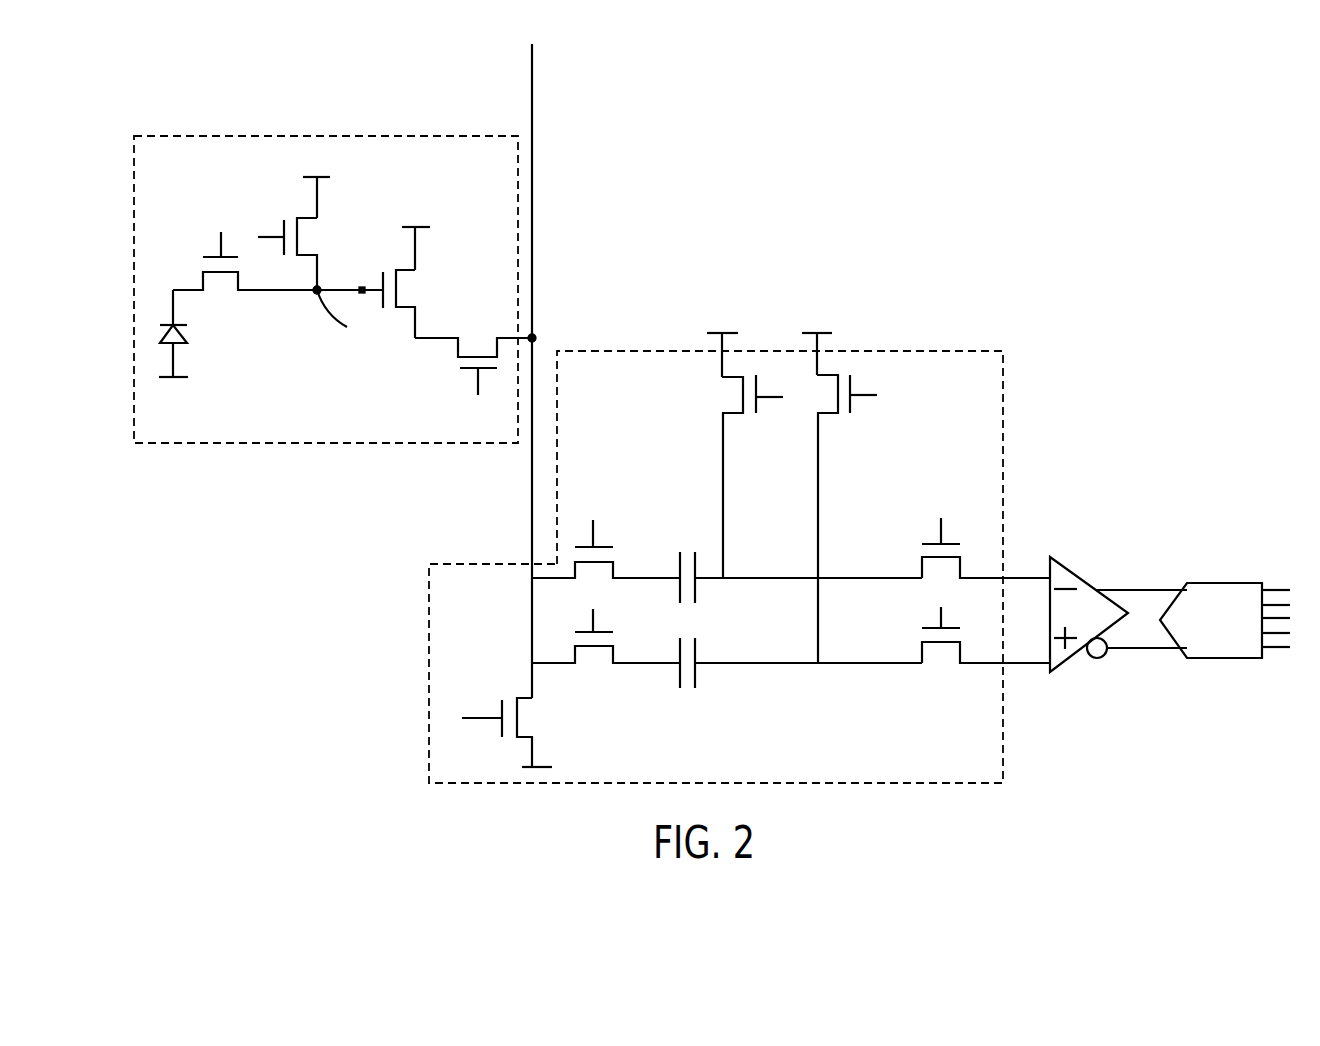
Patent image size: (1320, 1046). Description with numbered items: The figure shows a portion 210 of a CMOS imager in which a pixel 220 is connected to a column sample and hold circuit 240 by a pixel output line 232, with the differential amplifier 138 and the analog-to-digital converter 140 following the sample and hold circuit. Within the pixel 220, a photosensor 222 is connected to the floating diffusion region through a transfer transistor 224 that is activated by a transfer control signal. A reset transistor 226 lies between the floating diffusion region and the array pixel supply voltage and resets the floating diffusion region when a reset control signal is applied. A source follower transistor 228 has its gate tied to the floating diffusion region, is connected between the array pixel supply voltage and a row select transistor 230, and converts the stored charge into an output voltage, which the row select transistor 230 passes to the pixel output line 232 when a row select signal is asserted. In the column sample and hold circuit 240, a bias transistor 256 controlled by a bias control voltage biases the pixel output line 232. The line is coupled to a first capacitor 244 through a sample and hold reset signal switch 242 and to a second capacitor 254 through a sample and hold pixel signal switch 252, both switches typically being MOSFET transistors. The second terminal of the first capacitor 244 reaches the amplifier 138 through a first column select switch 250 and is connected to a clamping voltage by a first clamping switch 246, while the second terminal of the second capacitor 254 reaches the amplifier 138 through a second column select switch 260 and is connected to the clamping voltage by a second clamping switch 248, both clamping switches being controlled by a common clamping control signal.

The portion 210 is at (923, 155).
The pixel 220 is at (303, 443).
The photosensor 222 is at (162, 337).
The transfer transistor 224 is at (203, 272).
The reset transistor 226 is at (297, 255).
The source follower transistor 228 is at (415, 272).
The row select transistor 230 is at (458, 357).
The pixel output line 232 is at (532, 288).
The column sample and hold circuit 240 is at (1002, 410).
The sample and hold reset signal switch 242 is at (613, 562).
The first capacitor 244 is at (683, 552).
The first clamping switch 246 is at (743, 413).
The second clamping switch 248 is at (838, 413).
The first column select switch 250 is at (922, 558).
The sample and hold pixel signal switch 252 is at (613, 663).
The second capacitor 254 is at (700, 688).
The bias transistor 256 is at (538, 737).
The second column select switch 260 is at (923, 665).
The differential amplifier 138 is at (1057, 668).
The analog-to-digital converter 140 is at (1198, 660).